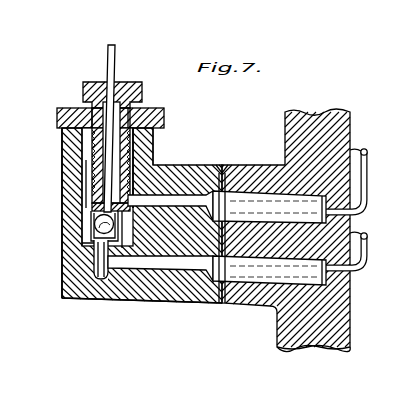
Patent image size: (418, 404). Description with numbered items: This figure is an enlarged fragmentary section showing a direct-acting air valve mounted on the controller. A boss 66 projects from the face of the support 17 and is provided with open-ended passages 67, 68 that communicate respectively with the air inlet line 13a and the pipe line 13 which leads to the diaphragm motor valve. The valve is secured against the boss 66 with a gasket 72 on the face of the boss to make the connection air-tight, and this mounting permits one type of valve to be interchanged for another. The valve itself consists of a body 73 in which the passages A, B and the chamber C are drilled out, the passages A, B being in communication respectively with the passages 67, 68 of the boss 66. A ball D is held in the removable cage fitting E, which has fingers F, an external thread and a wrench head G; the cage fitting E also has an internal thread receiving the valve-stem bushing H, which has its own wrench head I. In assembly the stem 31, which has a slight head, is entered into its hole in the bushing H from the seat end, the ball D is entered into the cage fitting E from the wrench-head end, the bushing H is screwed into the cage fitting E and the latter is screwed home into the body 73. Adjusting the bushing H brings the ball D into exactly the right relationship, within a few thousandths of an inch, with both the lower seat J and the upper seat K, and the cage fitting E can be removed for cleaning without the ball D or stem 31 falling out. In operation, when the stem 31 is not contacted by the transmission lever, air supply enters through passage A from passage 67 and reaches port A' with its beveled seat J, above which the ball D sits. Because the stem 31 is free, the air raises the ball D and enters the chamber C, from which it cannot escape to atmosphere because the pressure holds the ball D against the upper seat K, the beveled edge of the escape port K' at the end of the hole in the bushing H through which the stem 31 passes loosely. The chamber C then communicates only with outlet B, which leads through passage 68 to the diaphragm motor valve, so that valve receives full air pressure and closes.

The stem 31 is at (107, 55).
The wrench head I is at (137, 82).
The valve-stem bushing H is at (131, 106).
The wrench head G is at (57, 117).
The escape port K' is at (159, 168).
The cage fitting E is at (84, 174).
The upper seat K is at (79, 203).
The fingers F is at (90, 222).
The ball D is at (96, 229).
The chamber C is at (92, 243).
The lower seat J is at (100, 252).
The port A' is at (69, 230).
The passage A is at (142, 230).
The body 73 is at (193, 301).
The boss 66 is at (255, 308).
The support 17 is at (329, 340).
The gasket 72 is at (231, 163).
The outlet B is at (200, 200).
The passage 68 is at (269, 207).
The passage 67 is at (269, 270).
The pipe line 13 is at (366, 172).
The air inlet line 13a is at (366, 254).